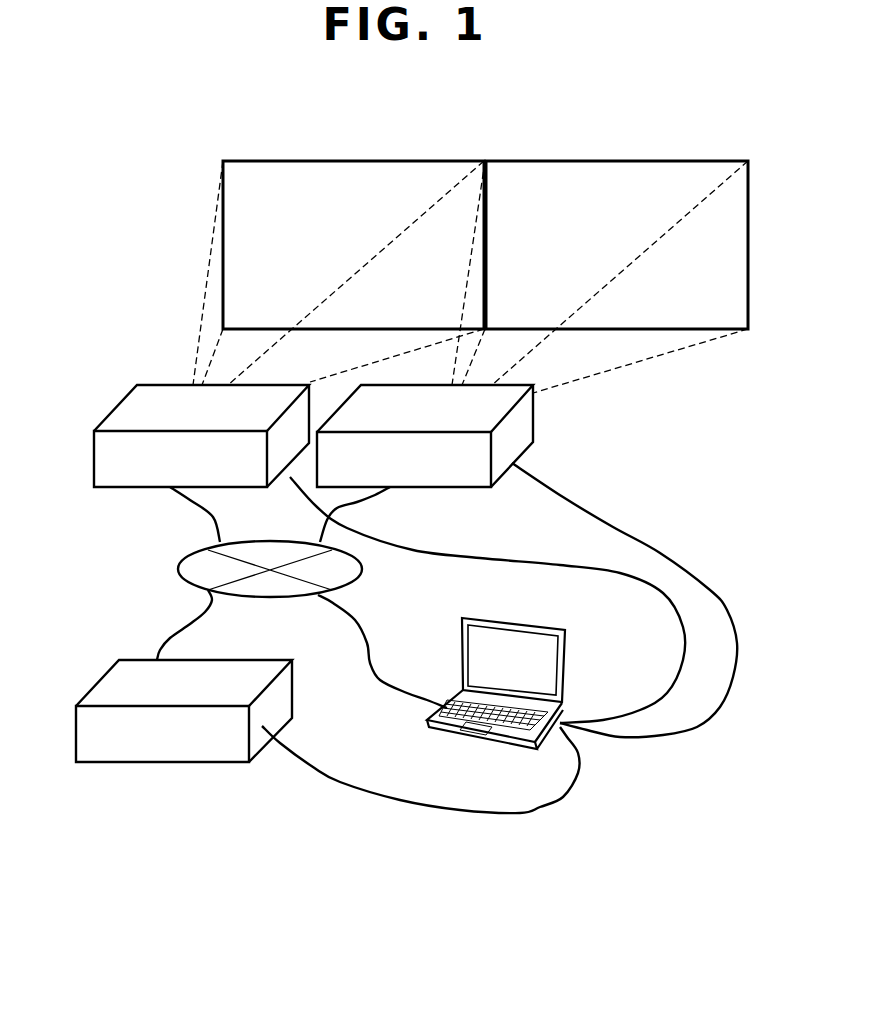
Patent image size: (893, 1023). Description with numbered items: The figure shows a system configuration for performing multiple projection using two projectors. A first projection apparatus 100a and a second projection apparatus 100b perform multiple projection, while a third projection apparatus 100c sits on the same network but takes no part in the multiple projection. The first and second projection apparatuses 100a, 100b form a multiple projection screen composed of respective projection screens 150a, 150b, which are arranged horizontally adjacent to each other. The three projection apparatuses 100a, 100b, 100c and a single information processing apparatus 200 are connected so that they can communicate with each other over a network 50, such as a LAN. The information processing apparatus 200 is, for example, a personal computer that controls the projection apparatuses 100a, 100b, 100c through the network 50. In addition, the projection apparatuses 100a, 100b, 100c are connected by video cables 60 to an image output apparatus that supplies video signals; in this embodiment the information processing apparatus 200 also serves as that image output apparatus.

The projection screen 150a is at (272, 175).
The projection screen 150b is at (686, 175).
The first projection apparatus 100a is at (122, 412).
The second projection apparatus 100b is at (523, 421).
The third projection apparatus 100c is at (110, 683).
The network 50 is at (178, 569).
The information processing apparatus 200 is at (553, 622).
The video cables 60 is at (645, 713).